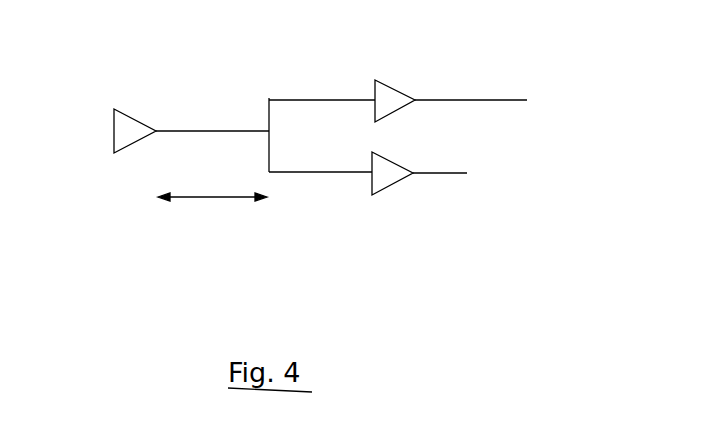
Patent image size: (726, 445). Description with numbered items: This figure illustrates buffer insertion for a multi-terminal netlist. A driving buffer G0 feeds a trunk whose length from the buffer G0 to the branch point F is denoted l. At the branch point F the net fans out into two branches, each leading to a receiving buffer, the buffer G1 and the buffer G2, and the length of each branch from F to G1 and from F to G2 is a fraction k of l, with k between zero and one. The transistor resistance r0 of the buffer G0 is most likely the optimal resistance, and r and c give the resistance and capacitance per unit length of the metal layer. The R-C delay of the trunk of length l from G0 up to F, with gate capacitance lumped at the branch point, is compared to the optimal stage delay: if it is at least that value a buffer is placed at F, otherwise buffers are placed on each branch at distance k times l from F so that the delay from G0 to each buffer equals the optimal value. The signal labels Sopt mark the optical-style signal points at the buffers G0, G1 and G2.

The buffer G0 is at (191, 124).
The buffer G1 is at (368, 173).
The buffer G2 is at (398, 100).
The branch point F is at (276, 135).
The optical signal Sopt is at (247, 136).
The length of the trunk l is at (212, 210).